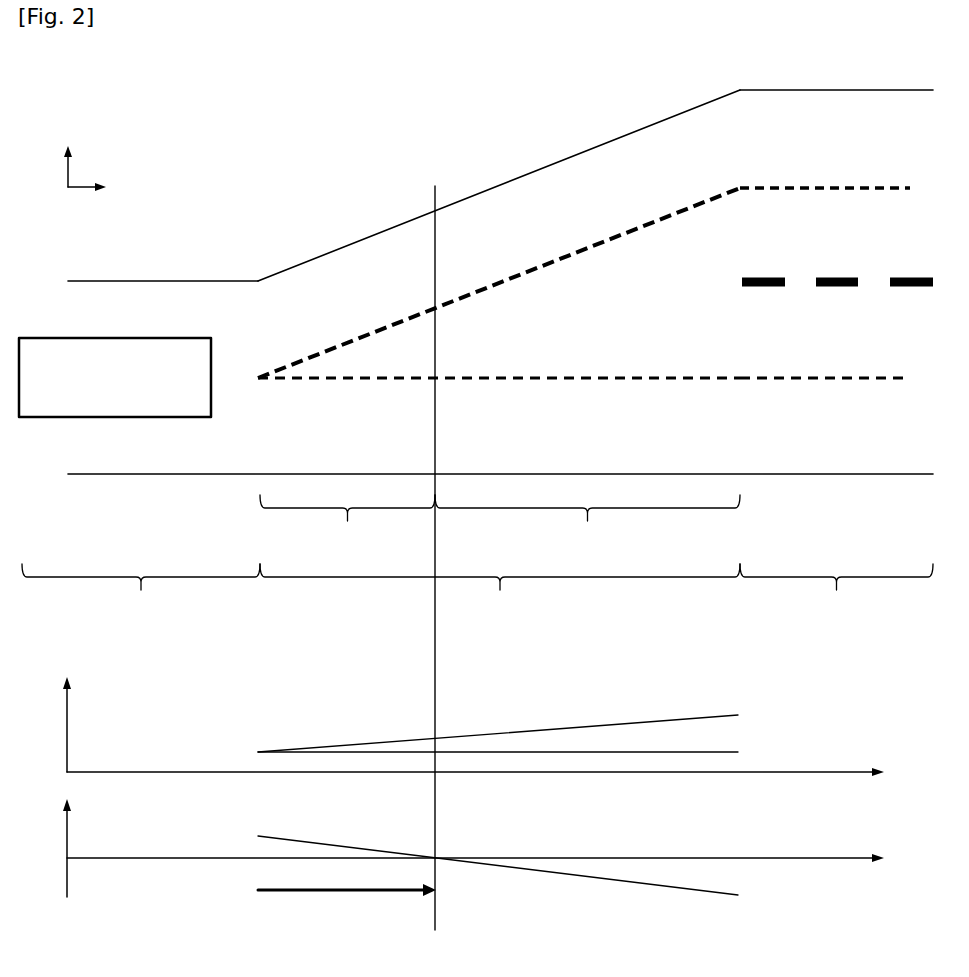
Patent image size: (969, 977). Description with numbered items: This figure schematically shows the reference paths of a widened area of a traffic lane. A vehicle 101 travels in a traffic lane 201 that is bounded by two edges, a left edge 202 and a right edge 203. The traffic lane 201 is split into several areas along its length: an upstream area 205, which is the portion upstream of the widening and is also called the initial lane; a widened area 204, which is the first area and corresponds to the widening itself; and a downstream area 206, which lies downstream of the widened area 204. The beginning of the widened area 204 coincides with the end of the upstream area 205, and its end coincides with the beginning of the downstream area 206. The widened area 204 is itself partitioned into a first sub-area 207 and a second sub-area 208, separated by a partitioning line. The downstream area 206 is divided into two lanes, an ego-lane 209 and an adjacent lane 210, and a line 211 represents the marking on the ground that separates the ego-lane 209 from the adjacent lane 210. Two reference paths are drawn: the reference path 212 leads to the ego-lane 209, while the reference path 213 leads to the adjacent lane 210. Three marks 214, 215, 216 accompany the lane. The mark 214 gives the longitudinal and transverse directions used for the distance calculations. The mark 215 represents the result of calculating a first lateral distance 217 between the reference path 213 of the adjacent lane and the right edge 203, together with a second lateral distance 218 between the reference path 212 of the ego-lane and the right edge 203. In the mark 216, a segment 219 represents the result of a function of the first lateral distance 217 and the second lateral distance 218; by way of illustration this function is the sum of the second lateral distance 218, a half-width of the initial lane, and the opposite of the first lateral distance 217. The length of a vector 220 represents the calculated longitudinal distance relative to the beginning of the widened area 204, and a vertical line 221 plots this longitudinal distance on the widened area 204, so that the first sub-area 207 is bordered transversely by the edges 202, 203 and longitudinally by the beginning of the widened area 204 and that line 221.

The vehicle 101 is at (115, 377).
The traffic lane 201 is at (352, 148).
The left edge 202 is at (162, 280).
The right edge 203 is at (152, 473).
The widened area 204 is at (500, 598).
The upstream area 205 is at (141, 598).
The downstream area 206 is at (836, 595).
The first sub-area 207 is at (347, 524).
The second sub-area 208 is at (587, 524).
The ego-lane 209 is at (825, 351).
The adjacent lane 210 is at (836, 122).
The line 211 is at (813, 277).
The reference path to the ego-lane 212 is at (566, 376).
The reference path to the adjacent lane 213 is at (592, 244).
The mark giving longitudinal and transverse direction 214 is at (99, 146).
The reference mark 215 is at (98, 729).
The reference mark 216 is at (91, 836).
The first lateral distance 217 is at (738, 715).
The second lateral distance 218 is at (738, 752).
The segment 219 is at (738, 895).
The vector 220 is at (256, 893).
The cross-section line 221 is at (432, 654).